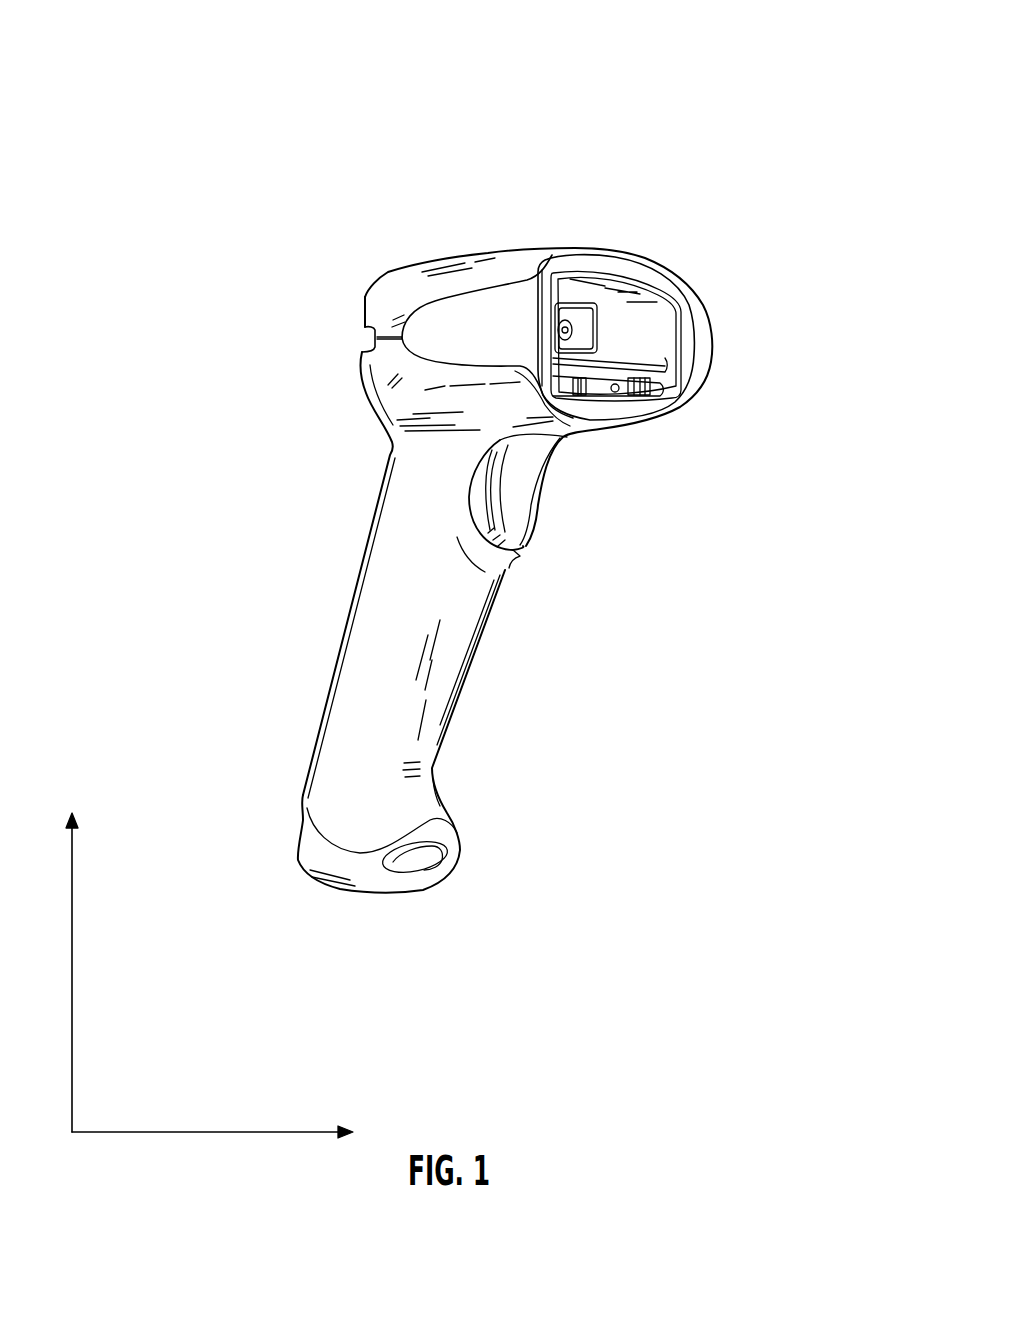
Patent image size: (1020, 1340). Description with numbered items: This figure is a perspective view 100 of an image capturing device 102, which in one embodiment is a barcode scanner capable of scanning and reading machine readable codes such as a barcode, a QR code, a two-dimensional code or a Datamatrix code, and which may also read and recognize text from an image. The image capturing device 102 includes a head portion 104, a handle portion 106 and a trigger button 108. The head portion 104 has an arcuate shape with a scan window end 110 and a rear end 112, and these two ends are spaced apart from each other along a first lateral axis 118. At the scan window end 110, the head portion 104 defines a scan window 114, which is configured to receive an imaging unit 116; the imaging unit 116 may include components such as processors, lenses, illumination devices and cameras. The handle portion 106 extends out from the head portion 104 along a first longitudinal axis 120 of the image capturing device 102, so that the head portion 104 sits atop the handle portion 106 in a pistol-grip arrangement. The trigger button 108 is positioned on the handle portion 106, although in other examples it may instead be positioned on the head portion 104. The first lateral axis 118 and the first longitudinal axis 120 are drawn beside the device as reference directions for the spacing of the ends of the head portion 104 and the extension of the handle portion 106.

The perspective view 100 is at (372, 137).
The image capturing device 102 is at (365, 296).
The head portion 104 is at (610, 250).
The handle portion 106 is at (356, 582).
The trigger button 108 is at (540, 490).
The scan window end 110 is at (713, 341).
The rear end 112 is at (362, 338).
The scan window 114 is at (689, 303).
The imaging unit 116 is at (597, 323).
The first lateral axis 118 is at (253, 1132).
The first longitudinal axis 120 is at (72, 917).